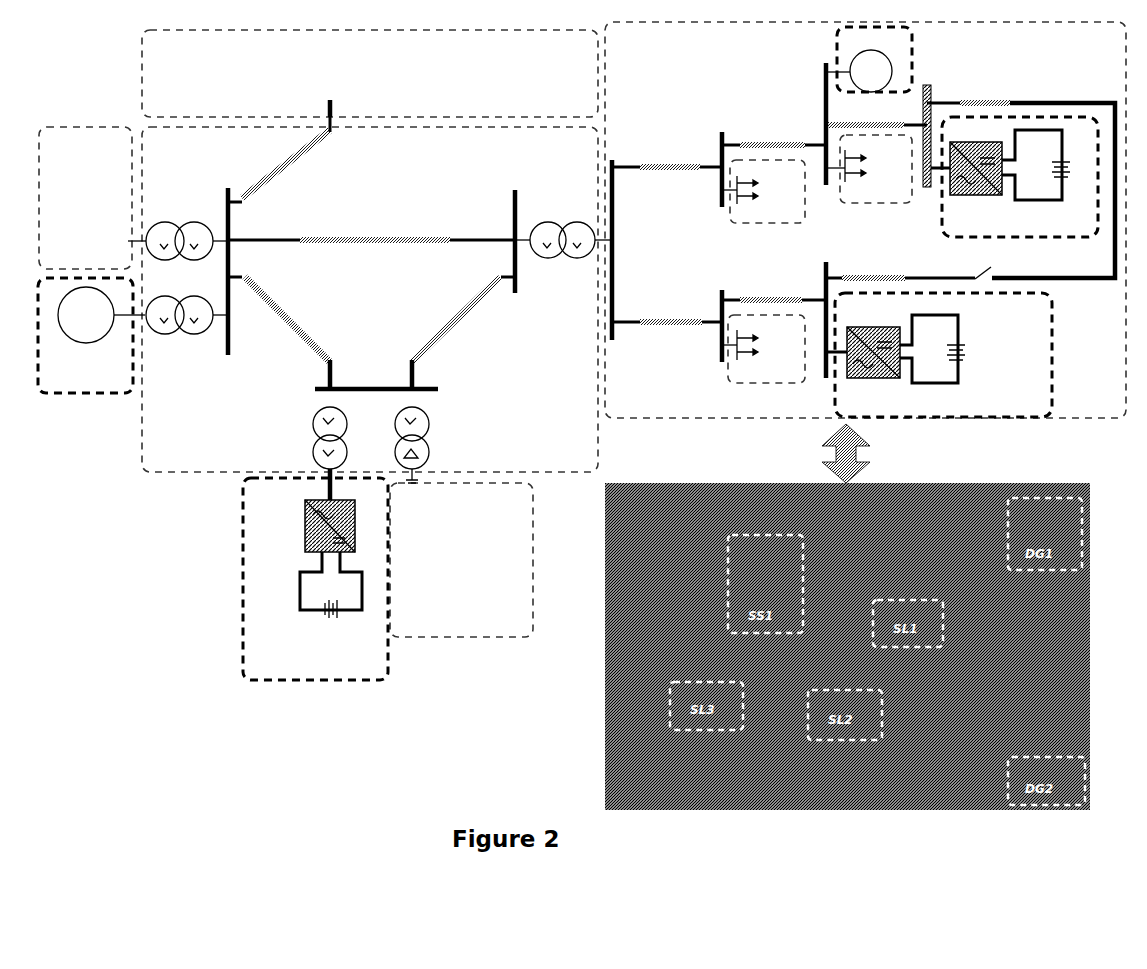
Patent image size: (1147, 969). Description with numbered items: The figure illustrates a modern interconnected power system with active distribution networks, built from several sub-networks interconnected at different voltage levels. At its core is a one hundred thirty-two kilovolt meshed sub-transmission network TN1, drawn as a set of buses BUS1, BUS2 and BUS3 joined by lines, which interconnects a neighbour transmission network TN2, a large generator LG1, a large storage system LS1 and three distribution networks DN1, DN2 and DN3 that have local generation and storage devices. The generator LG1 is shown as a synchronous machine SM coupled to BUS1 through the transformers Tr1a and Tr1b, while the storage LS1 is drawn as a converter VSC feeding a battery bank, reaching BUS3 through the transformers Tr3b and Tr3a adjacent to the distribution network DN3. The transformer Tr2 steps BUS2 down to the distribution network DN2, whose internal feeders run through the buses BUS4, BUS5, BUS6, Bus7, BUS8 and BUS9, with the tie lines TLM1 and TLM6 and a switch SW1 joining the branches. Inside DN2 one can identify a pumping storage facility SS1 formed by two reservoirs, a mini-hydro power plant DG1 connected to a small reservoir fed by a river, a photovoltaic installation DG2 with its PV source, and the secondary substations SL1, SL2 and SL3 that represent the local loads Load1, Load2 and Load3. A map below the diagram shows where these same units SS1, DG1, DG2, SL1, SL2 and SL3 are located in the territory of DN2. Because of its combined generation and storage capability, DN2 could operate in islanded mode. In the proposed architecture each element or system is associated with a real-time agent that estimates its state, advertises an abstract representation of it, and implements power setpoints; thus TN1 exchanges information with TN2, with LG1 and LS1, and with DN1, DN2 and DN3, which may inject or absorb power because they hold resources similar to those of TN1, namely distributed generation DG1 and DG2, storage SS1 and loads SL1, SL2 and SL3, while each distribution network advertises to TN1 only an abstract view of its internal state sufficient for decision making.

The sub-transmission network TN1 is at (370, 299).
The neighbour transmission network TN2 is at (370, 73).
The distribution network DN1 is at (85, 198).
The distribution network DN2 is at (865, 220).
The distribution network DN3 is at (461, 560).
The large generator LG1 is at (91, 335).
The synchronous machine SM is at (101, 315).
The large storage system LS1 is at (315, 579).
The voltage source converter VSC is at (344, 526).
The transformer 1a Tr1a is at (178, 238).
The transformer 1b Tr1b is at (187, 317).
The transformer 2 Tr2 is at (563, 245).
The transformer 3a Tr3a is at (426, 445).
The transformer 3b Tr3b is at (346, 453).
The bus 1 BUS1 is at (217, 262).
The bus 2 BUS2 is at (514, 234).
The bus 3 BUS3 is at (394, 390).
The bus 4 BUS4 is at (624, 242).
The bus 5 BUS5 is at (710, 160).
The bus 6 BUS6 is at (810, 115).
The bus 7 Bus7 is at (719, 314).
The bus 8 BUS8 is at (817, 311).
The bus 9 BUS9 is at (935, 127).
The tie line 1 TLM1 is at (1021, 179).
The tie line 6 TLM6 is at (876, 114).
The switch 1 SW1 is at (987, 266).
The mini-hydro power plant DG1 is at (891, 59).
The photovoltaic installation DG2 is at (1014, 177).
The photovoltaic source PV is at (1071, 169).
The load 1 Load1 is at (763, 191).
The load 2 Load2 is at (869, 169).
The load 3 Load3 is at (763, 349).
The secondary substation SL1 is at (776, 215).
The secondary substation SL2 is at (881, 192).
The secondary substation SL3 is at (773, 372).
The pumping storage facility SS1 is at (939, 355).